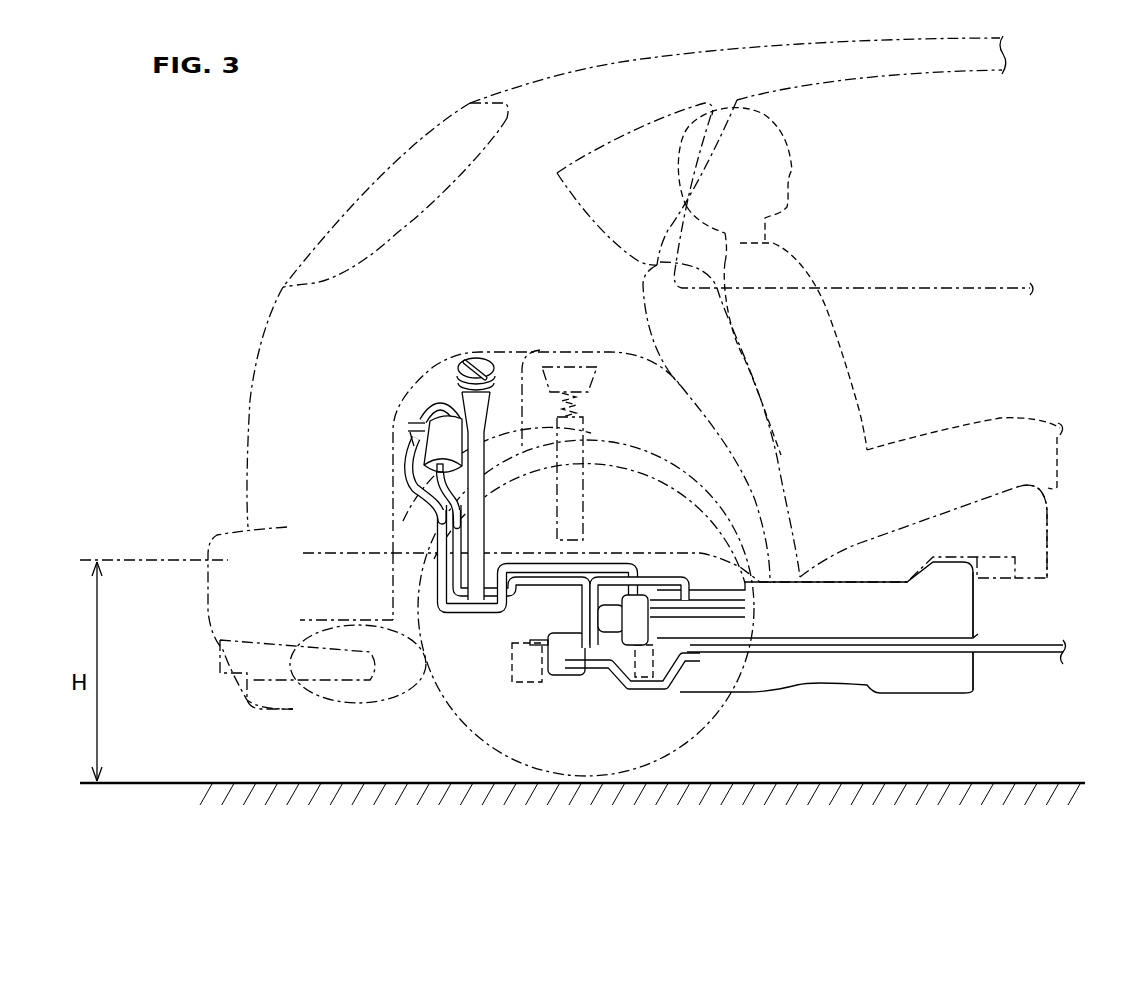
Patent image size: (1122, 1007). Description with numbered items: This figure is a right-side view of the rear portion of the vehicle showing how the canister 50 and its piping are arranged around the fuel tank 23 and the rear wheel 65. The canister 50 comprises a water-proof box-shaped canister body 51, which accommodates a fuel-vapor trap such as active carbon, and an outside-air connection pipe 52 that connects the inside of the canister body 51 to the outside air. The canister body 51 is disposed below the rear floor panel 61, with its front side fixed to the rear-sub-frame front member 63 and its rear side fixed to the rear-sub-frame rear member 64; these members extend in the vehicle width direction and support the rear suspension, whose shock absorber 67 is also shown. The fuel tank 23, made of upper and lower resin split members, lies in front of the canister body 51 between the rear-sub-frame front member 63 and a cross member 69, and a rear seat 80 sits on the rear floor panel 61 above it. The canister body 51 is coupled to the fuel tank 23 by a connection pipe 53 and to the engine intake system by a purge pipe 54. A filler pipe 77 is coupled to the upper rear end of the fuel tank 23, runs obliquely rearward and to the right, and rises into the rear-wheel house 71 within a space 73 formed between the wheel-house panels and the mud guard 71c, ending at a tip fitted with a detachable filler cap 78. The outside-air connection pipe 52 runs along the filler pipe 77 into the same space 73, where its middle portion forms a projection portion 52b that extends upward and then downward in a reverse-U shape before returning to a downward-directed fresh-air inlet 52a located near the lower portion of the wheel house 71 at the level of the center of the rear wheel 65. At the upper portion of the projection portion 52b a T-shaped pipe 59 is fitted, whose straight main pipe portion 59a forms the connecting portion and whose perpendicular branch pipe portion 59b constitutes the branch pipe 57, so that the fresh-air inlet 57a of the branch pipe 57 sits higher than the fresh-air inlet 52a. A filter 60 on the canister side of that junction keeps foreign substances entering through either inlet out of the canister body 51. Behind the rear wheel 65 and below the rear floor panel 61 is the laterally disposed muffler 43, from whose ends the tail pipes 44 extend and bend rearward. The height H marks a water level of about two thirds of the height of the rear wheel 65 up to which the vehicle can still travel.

The fuel tank 23 is at (913, 697).
The muffler 43 is at (353, 704).
The tail pipes 44 is at (257, 702).
The canister 50 is at (512, 590).
The canister body 51 is at (560, 626).
The outside-air connection pipe 52 is at (555, 572).
The fresh-air inlet 52a is at (576, 625).
The projection portion 52b is at (435, 390).
The connection pipe 53 is at (660, 577).
The purge pipe 54 is at (975, 660).
The branch pipe 57 is at (373, 444).
The fresh-air inlet 57a is at (400, 410).
The T-shaped pipe 59 is at (364, 460).
The main pipe portion 59a is at (410, 445).
The branch pipe portion 59b is at (404, 427).
The filter 60 is at (485, 436).
The rear floor panel 61 is at (614, 560).
The rear-sub-frame front member 63 is at (644, 677).
The rear-sub-frame rear member 64 is at (523, 682).
The rear wheel 65 is at (703, 737).
The shock absorber 67 is at (583, 427).
The cross member 69 is at (995, 580).
The rear-wheel house 71 is at (505, 341).
The mud guard 71c is at (552, 437).
The space 73 is at (561, 326).
The filler pipe 77 is at (485, 530).
The filler cap 78 is at (478, 358).
The rear seat 80 is at (1053, 528).